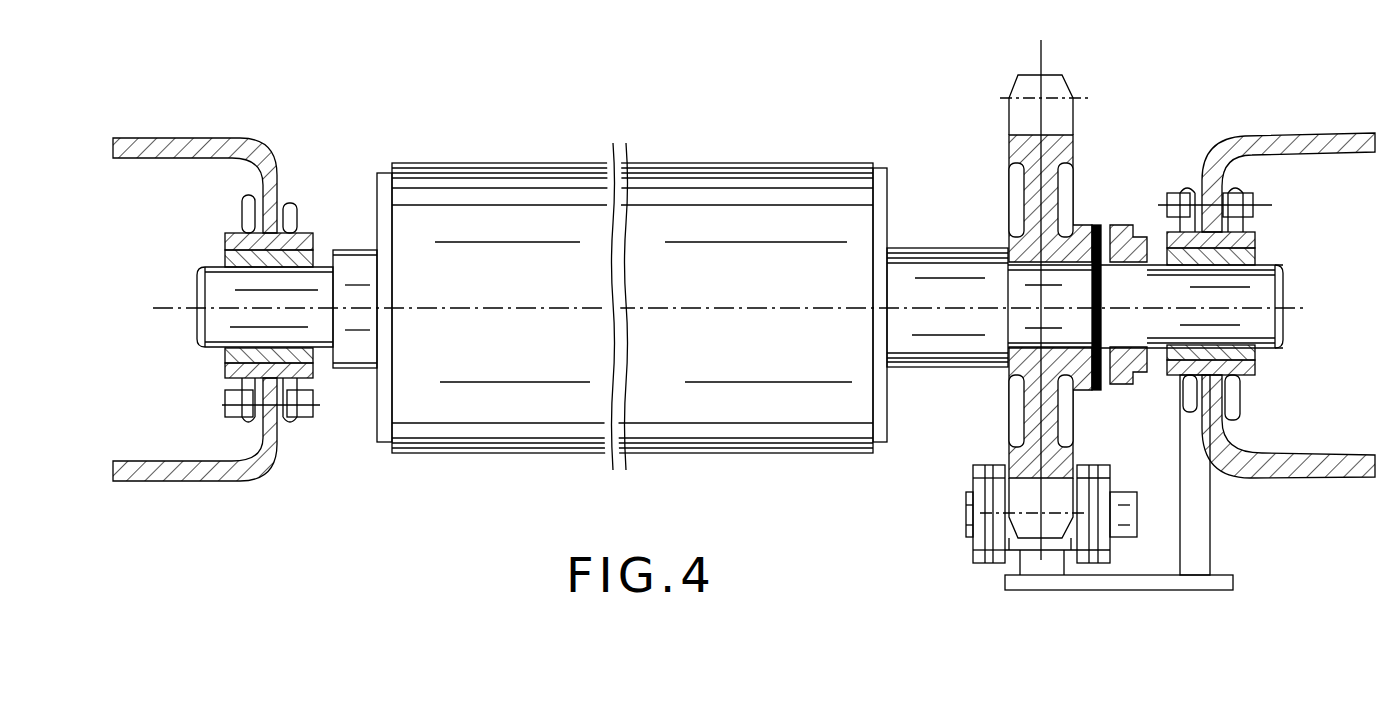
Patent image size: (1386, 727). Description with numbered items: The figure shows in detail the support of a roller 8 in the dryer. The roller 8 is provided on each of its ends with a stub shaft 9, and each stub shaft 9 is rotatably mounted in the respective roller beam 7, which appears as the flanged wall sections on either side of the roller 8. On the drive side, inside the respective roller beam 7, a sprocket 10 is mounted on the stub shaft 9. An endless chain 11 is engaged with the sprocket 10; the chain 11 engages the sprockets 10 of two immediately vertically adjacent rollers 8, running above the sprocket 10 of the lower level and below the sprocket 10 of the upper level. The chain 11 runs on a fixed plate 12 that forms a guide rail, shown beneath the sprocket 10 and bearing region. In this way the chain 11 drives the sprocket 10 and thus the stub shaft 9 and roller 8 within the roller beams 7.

The roller beam 7 is at (192, 140).
The roller 8 is at (460, 183).
The stub shaft 9 is at (205, 268).
The sprocket 10 is at (1058, 90).
The endless chain 11 is at (978, 557).
The fixed plate 12 is at (1212, 590).